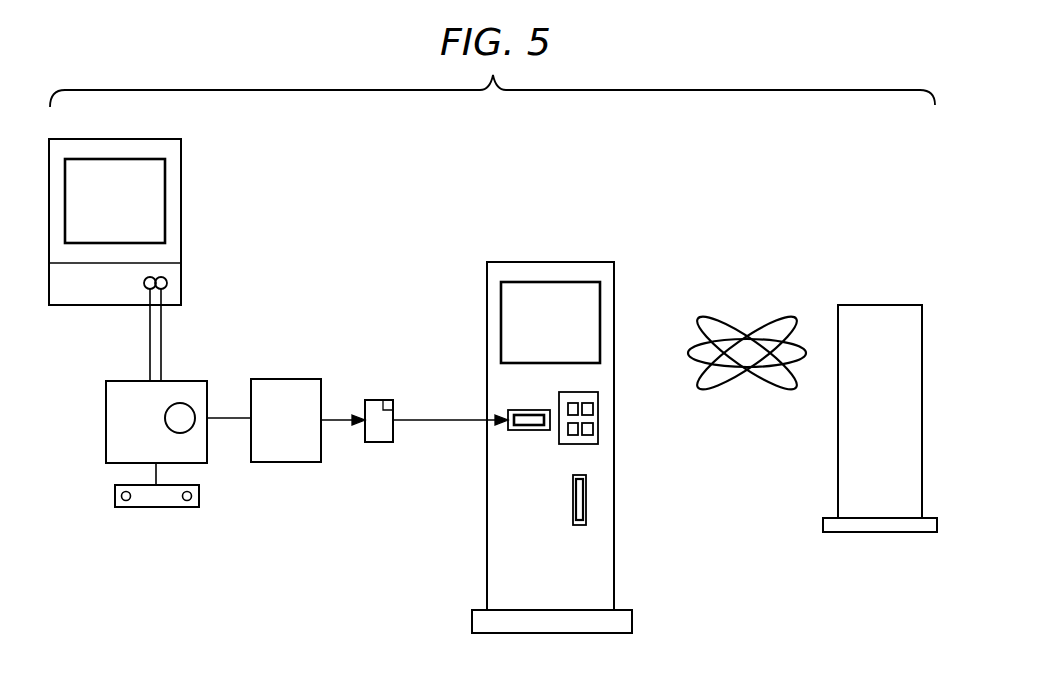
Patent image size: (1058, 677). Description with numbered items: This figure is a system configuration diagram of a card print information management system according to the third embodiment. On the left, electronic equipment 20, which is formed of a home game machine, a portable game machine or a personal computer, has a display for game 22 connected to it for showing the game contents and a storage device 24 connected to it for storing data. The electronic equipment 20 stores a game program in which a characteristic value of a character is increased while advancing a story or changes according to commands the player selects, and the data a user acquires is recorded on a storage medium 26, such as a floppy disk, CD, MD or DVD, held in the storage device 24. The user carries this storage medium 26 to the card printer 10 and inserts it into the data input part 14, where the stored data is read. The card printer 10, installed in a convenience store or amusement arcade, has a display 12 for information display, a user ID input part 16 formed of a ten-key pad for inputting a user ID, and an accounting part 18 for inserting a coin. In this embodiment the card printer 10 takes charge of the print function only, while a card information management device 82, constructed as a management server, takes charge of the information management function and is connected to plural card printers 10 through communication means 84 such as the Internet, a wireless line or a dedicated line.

The card printer 10 is at (550, 409).
The display 12 is at (510, 322).
The data input part 14 is at (530, 428).
The user ID input part 16 is at (600, 417).
The accounting part 18 is at (587, 497).
The electronic equipment 20 is at (105, 422).
The display for game 22 is at (155, 204).
The storage device 24 is at (286, 379).
The storage medium 26 is at (381, 400).
The card information management device 82 is at (880, 305).
The communication means 84 is at (720, 323).